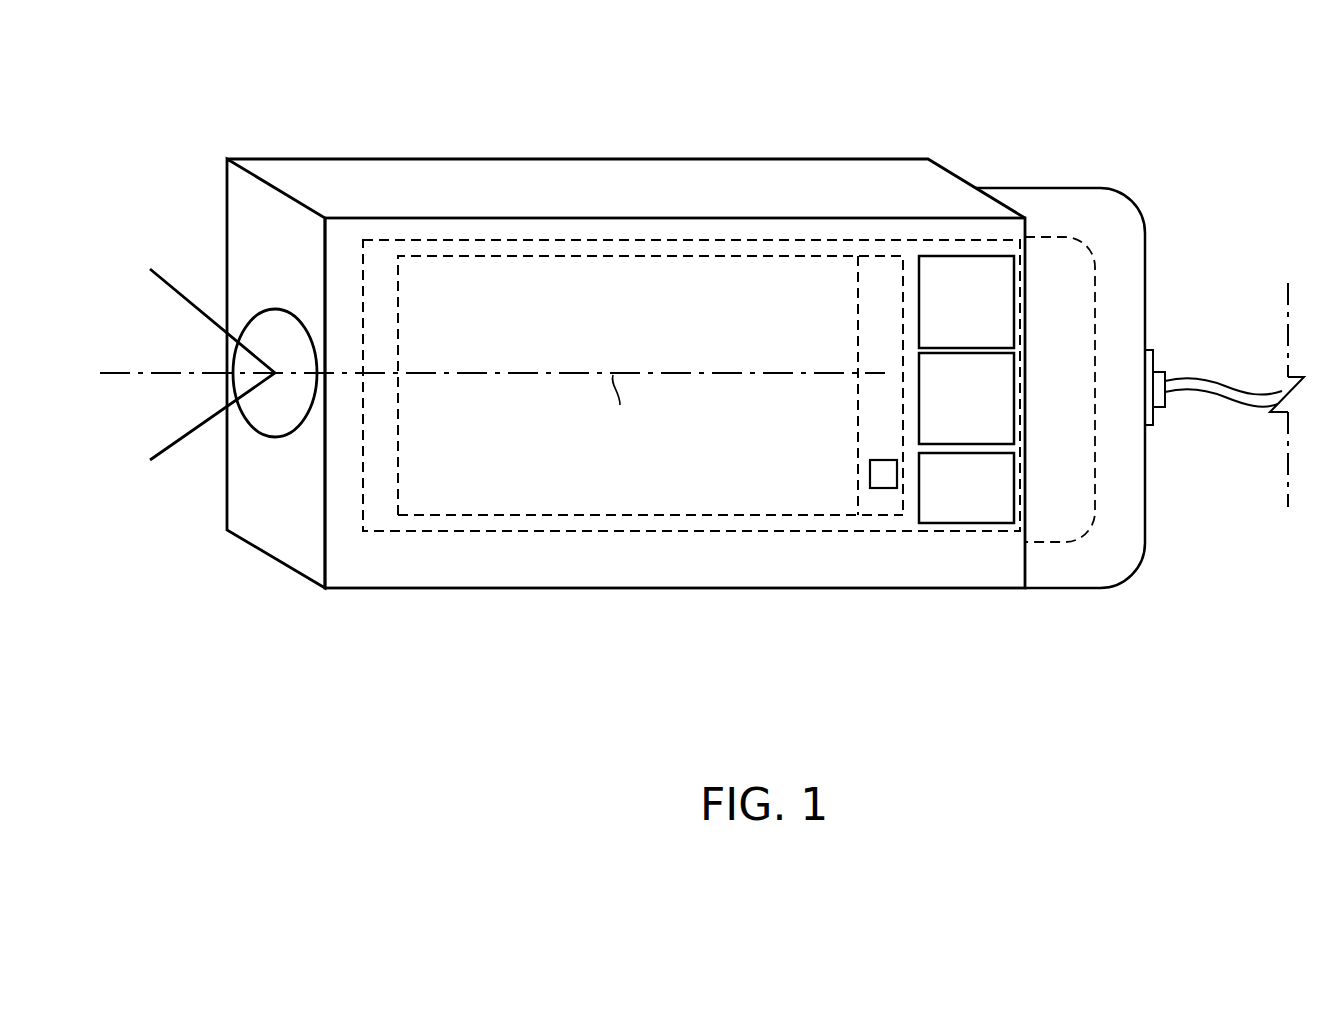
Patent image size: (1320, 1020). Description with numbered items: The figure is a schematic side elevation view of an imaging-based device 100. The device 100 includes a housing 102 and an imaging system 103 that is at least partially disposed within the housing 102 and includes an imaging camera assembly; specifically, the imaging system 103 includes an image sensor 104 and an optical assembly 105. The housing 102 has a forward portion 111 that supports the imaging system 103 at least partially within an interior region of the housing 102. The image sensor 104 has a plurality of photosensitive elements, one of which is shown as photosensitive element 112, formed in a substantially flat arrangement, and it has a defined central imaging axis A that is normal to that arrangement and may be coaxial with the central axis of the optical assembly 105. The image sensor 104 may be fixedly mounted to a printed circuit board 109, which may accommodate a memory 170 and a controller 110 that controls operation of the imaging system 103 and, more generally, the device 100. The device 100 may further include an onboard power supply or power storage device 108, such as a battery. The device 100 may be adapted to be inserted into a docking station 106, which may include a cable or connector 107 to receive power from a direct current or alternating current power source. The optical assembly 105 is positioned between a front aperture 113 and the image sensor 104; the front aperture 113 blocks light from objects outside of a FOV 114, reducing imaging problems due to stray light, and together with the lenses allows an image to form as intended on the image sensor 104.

The imaging-based device 100 is at (214, 84).
The housing 102 is at (955, 172).
The imaging system 103 is at (650, 518).
The image sensor 104 is at (882, 280).
The optical assembly 105 is at (745, 256).
The docking station 106 is at (1132, 200).
The cable or connector 107 is at (1248, 395).
The onboard power supply or power storage device 108 is at (992, 316).
The printed circuit board 109 is at (668, 240).
The controller 110 is at (992, 414).
The forward portion 111 is at (558, 142).
The photosensitive element 112 is at (883, 488).
The front aperture 113 is at (283, 325).
The FOV 114 is at (172, 448).
The memory 170 is at (992, 504).